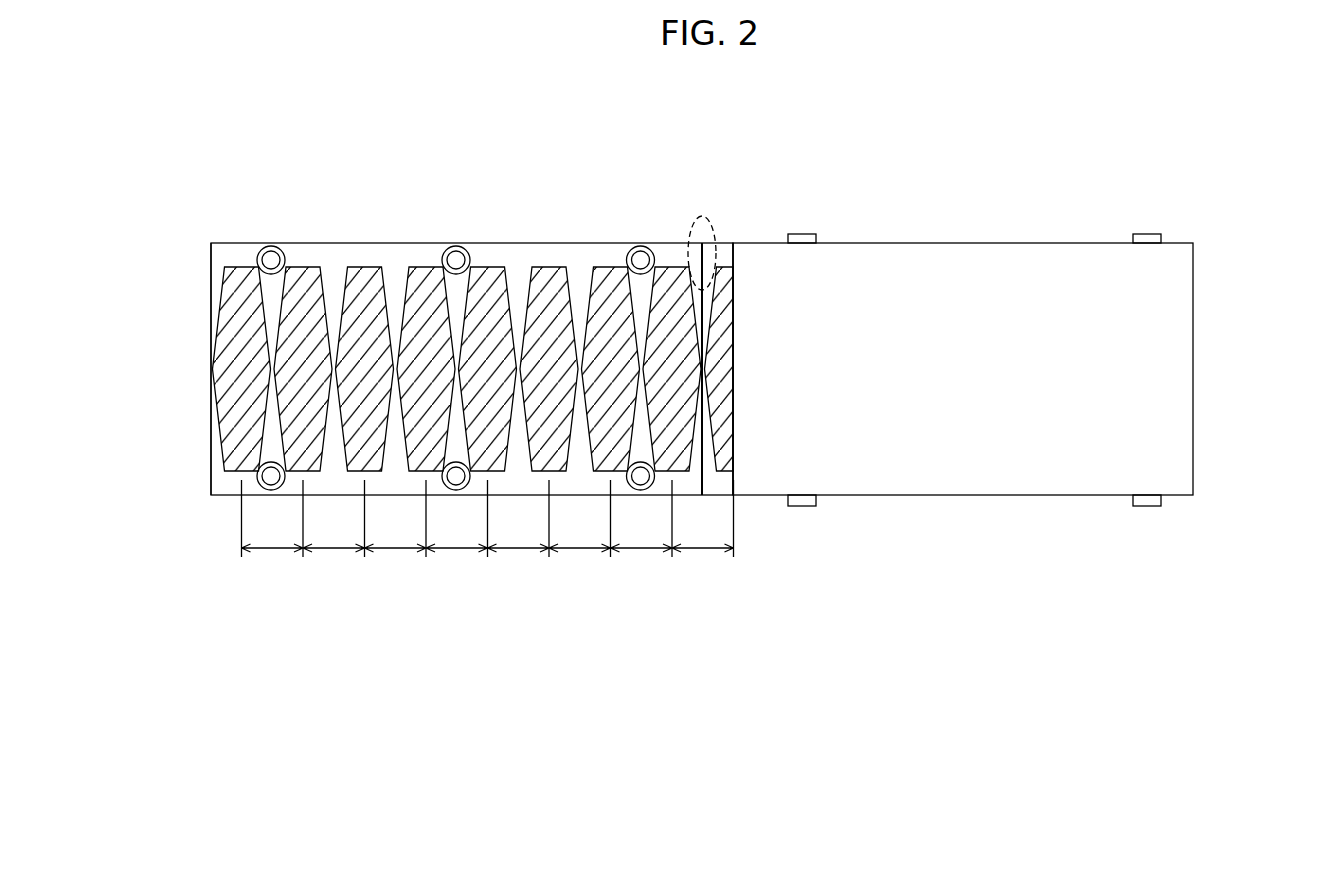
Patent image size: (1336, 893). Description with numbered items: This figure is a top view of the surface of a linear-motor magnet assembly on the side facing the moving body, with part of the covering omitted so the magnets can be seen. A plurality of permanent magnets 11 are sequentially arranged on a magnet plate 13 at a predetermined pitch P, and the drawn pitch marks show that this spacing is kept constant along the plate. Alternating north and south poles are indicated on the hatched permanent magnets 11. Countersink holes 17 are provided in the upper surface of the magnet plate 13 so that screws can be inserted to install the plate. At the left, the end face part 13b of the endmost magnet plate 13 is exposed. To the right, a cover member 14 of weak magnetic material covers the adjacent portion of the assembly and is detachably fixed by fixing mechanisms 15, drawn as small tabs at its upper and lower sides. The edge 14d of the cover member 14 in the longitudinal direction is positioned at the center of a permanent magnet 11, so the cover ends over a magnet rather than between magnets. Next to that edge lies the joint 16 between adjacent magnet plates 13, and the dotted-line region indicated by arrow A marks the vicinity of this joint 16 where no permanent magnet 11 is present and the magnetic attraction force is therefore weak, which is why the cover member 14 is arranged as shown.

The permanent magnet 11 is at (222, 419).
The magnet plate 13 is at (394, 269).
The end face part 13b is at (210, 275).
The cover member 14 is at (1148, 358).
The edge of cover member 14d is at (733, 482).
The fixing mechanism 15 is at (805, 233).
The joint 16 is at (690, 229).
The countersink hole 17 is at (280, 247).
The arrow A is at (715, 232).
The predetermined pitch P is at (488, 518).